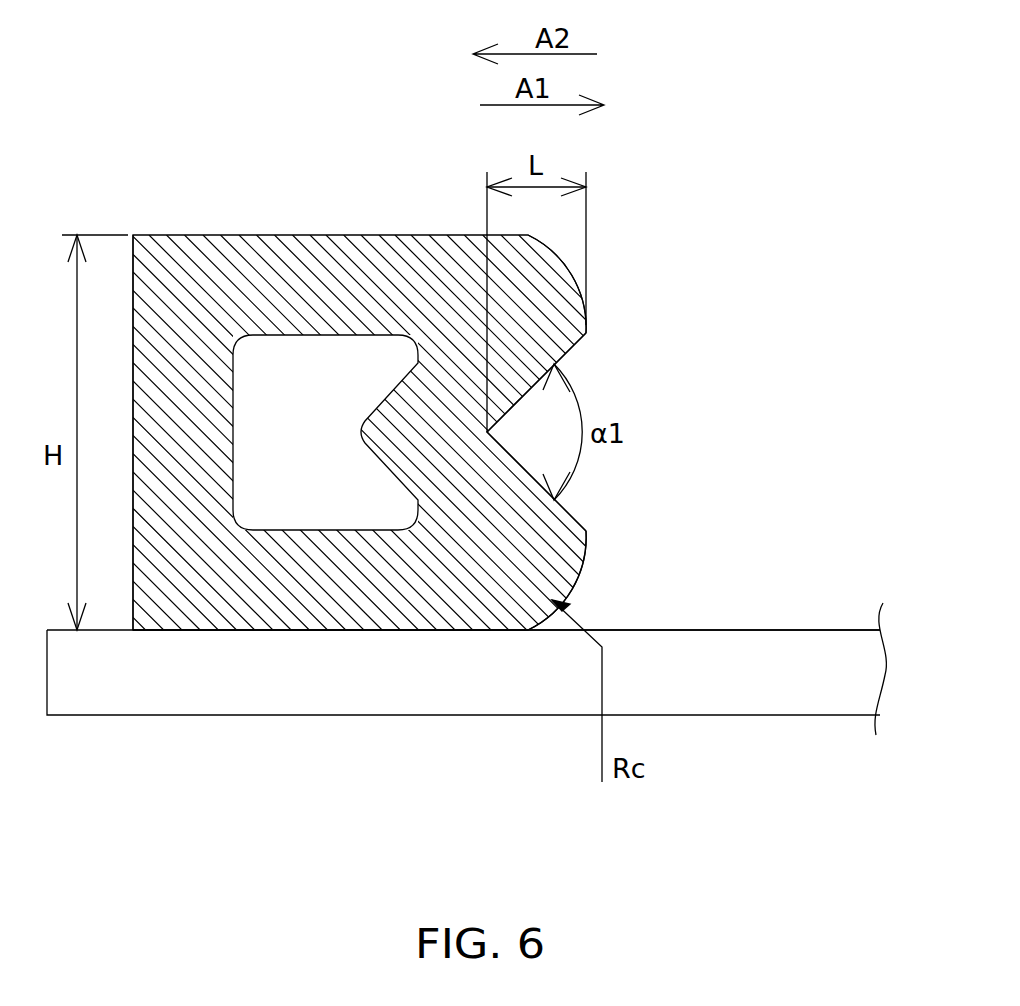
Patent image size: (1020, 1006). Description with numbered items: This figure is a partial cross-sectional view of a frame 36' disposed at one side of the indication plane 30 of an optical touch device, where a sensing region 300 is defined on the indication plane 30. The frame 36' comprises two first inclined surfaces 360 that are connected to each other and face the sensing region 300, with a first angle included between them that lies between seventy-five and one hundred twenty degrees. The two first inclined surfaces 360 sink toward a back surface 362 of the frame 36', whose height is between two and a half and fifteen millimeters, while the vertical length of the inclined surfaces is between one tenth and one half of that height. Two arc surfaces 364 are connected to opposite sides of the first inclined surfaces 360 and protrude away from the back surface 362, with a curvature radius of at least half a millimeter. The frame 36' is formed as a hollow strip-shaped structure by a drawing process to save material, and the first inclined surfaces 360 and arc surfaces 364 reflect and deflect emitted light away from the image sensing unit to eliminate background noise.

The frame 36' is at (359, 356).
The back surface 362 is at (131, 268).
The arc surfaces 364 is at (563, 280).
The first inclined surfaces 360 is at (588, 343).
The sensing region 300 is at (767, 630).
The indication plane 30 is at (722, 700).